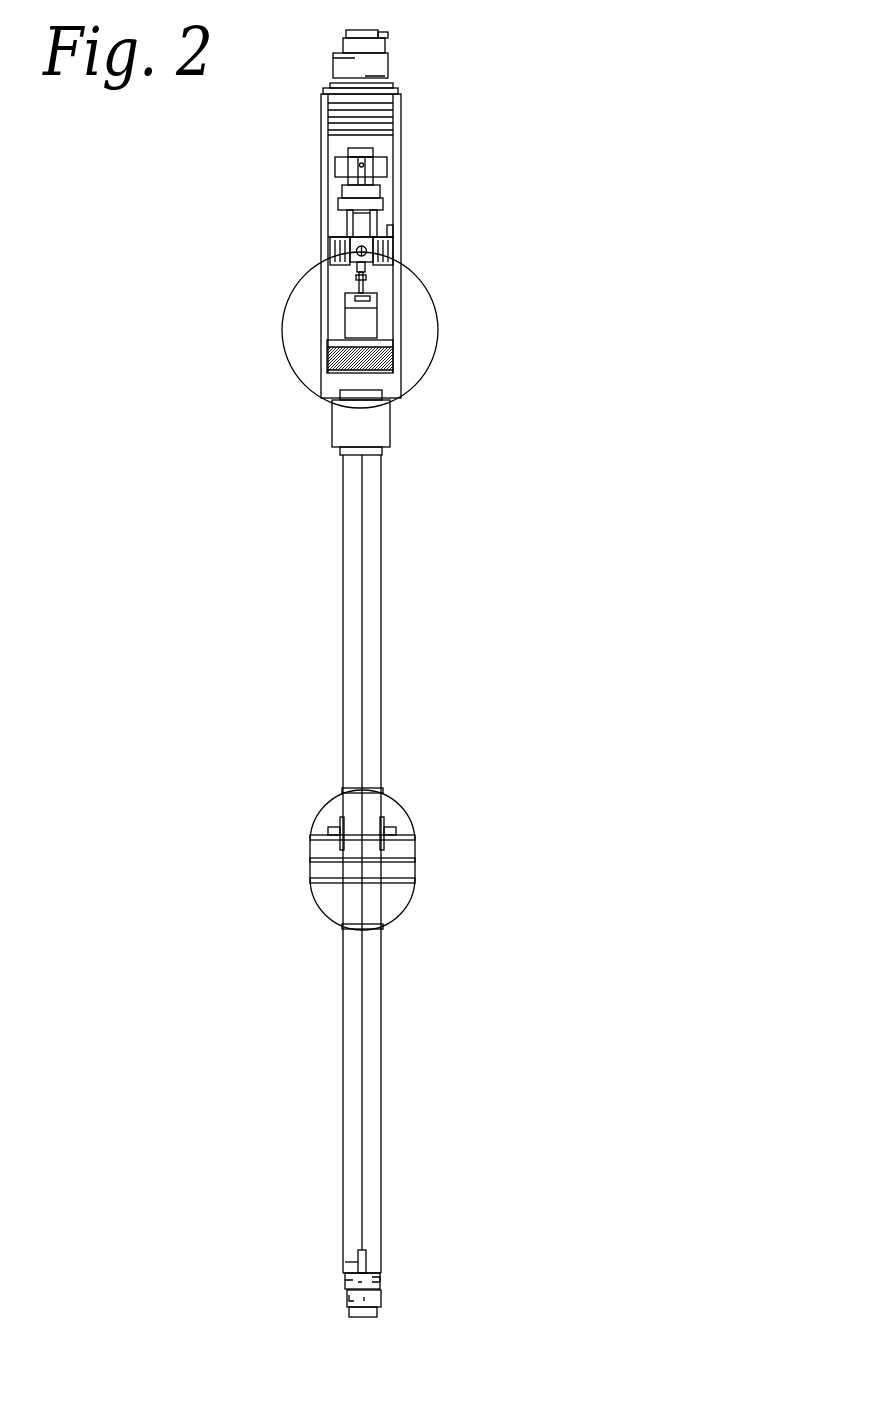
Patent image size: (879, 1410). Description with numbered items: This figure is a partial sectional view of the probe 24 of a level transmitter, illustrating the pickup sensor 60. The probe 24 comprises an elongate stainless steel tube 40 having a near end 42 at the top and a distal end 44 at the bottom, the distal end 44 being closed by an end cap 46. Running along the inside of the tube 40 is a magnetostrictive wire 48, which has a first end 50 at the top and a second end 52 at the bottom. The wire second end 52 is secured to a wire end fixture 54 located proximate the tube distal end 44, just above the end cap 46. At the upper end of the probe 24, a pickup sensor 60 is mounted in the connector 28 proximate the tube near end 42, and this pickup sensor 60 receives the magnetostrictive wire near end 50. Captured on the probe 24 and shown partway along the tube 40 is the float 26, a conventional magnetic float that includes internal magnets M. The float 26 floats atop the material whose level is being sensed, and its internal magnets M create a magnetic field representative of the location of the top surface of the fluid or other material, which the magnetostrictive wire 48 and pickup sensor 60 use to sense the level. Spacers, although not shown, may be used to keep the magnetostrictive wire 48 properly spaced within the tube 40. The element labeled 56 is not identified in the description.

The connector 28 is at (351, 215).
The first end of magnetostrictive wire 50 is at (368, 270).
The pickup sensor 60 is at (345, 318).
The near end of tube 42 is at (381, 460).
The elongate stainless steel tube 40 is at (378, 601).
The probe 24 is at (453, 864).
The magnetostrictive wire 48 is at (363, 740).
The float 26 is at (460, 859).
The internal magnets M is at (396, 829).
The second end of magnetostrictive wire 52 is at (363, 1235).
The lower shaft end 56 is at (358, 1262).
The distal end of tube 44 is at (380, 1266).
The wire end fixture 54 is at (347, 1285).
The end cap 46 is at (381, 1297).